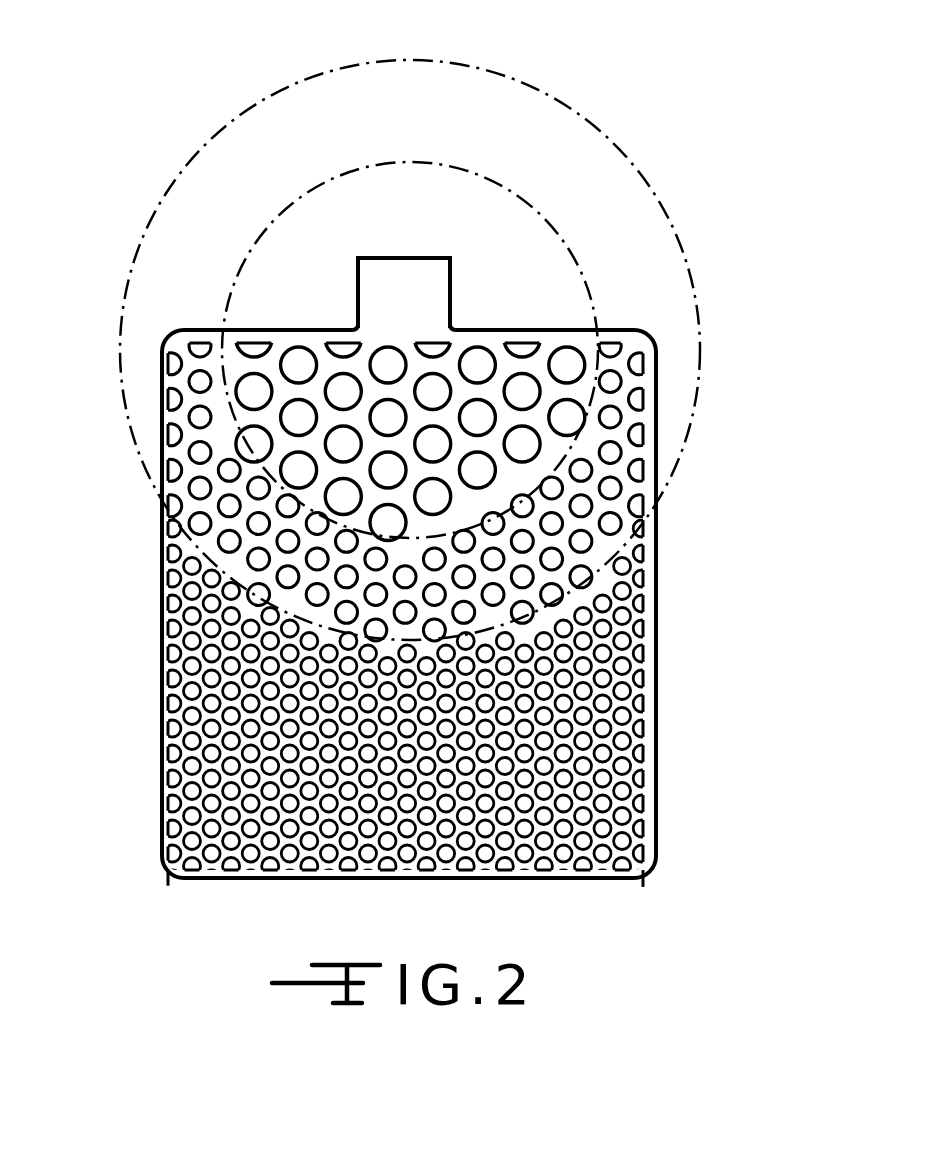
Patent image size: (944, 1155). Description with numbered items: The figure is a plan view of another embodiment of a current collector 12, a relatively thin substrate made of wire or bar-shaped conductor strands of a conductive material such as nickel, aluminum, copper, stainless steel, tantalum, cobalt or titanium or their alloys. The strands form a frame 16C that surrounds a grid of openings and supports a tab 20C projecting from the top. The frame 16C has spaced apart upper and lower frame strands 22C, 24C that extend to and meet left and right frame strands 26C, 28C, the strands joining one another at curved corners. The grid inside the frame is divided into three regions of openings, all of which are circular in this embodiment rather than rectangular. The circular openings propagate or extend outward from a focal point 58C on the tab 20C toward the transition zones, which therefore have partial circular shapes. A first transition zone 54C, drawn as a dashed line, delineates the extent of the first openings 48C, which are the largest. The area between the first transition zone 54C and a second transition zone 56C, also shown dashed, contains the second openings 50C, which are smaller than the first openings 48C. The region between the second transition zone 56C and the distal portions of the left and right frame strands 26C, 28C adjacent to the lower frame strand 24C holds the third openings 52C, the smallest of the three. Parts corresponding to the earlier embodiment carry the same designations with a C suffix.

The current collector 12 is at (436, 495).
The frame 16C is at (647, 458).
The tab 20C is at (386, 284).
The upper frame strand 22C is at (287, 340).
The lower frame strand 24C is at (577, 878).
The left frame strand 26C is at (158, 780).
The right frame strand 28C is at (658, 735).
The first openings 48C is at (521, 374).
The second openings 50C is at (620, 417).
The third openings 52C is at (632, 638).
The first transition zone 54C is at (593, 307).
The second transition zone 56C is at (702, 338).
The focal point 58C is at (420, 353).